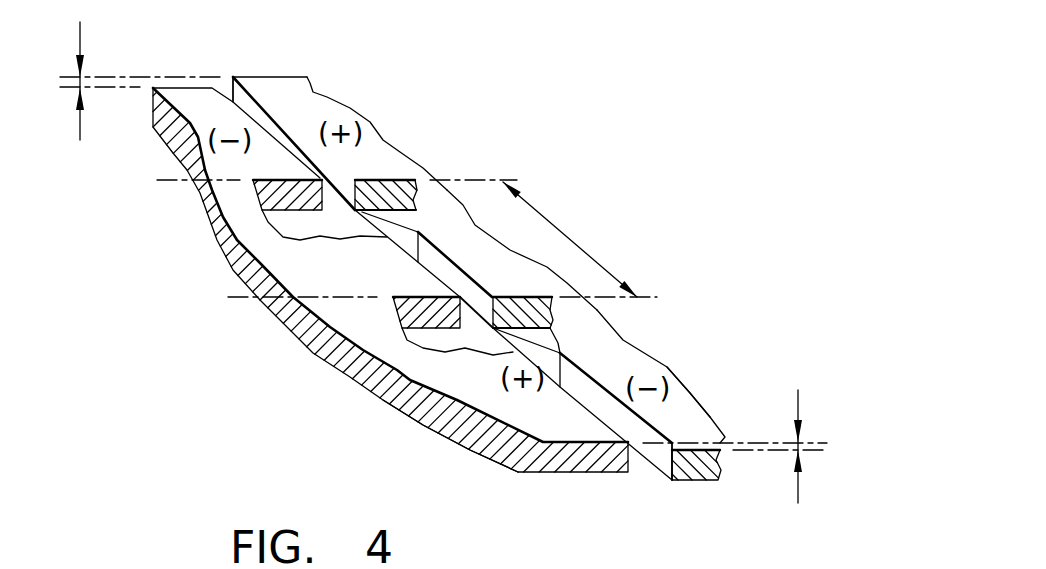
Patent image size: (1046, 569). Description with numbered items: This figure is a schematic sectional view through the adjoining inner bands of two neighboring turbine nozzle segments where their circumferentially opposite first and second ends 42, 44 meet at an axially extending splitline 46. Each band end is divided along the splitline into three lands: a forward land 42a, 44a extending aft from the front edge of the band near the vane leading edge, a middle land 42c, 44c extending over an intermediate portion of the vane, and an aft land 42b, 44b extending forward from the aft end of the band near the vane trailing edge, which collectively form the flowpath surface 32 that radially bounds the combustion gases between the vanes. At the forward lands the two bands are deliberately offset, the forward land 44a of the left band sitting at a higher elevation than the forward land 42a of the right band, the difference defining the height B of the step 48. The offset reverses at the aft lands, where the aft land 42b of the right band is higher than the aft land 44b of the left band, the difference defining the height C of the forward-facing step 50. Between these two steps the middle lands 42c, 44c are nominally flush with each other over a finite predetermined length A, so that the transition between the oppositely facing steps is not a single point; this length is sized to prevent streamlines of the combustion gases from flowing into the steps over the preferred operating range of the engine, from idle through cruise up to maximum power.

The outer surface / substrate 32 is at (467, 445).
The first end 42 is at (706, 490).
The forward land 42a is at (622, 359).
The aft land 42b is at (318, 108).
The middle land 42c is at (505, 259).
The second end 44 is at (562, 479).
The forward land 44a is at (478, 380).
The aft land 44b is at (177, 93).
The middle land 44c is at (388, 274).
The splitline 46 is at (647, 472).
The aft-facing step 48 is at (607, 396).
The forward-facing step 50 is at (233, 78).
The length of middle lands A is at (570, 239).
The height of step at forward lands B is at (800, 408).
The height of forward-facing step C is at (80, 43).